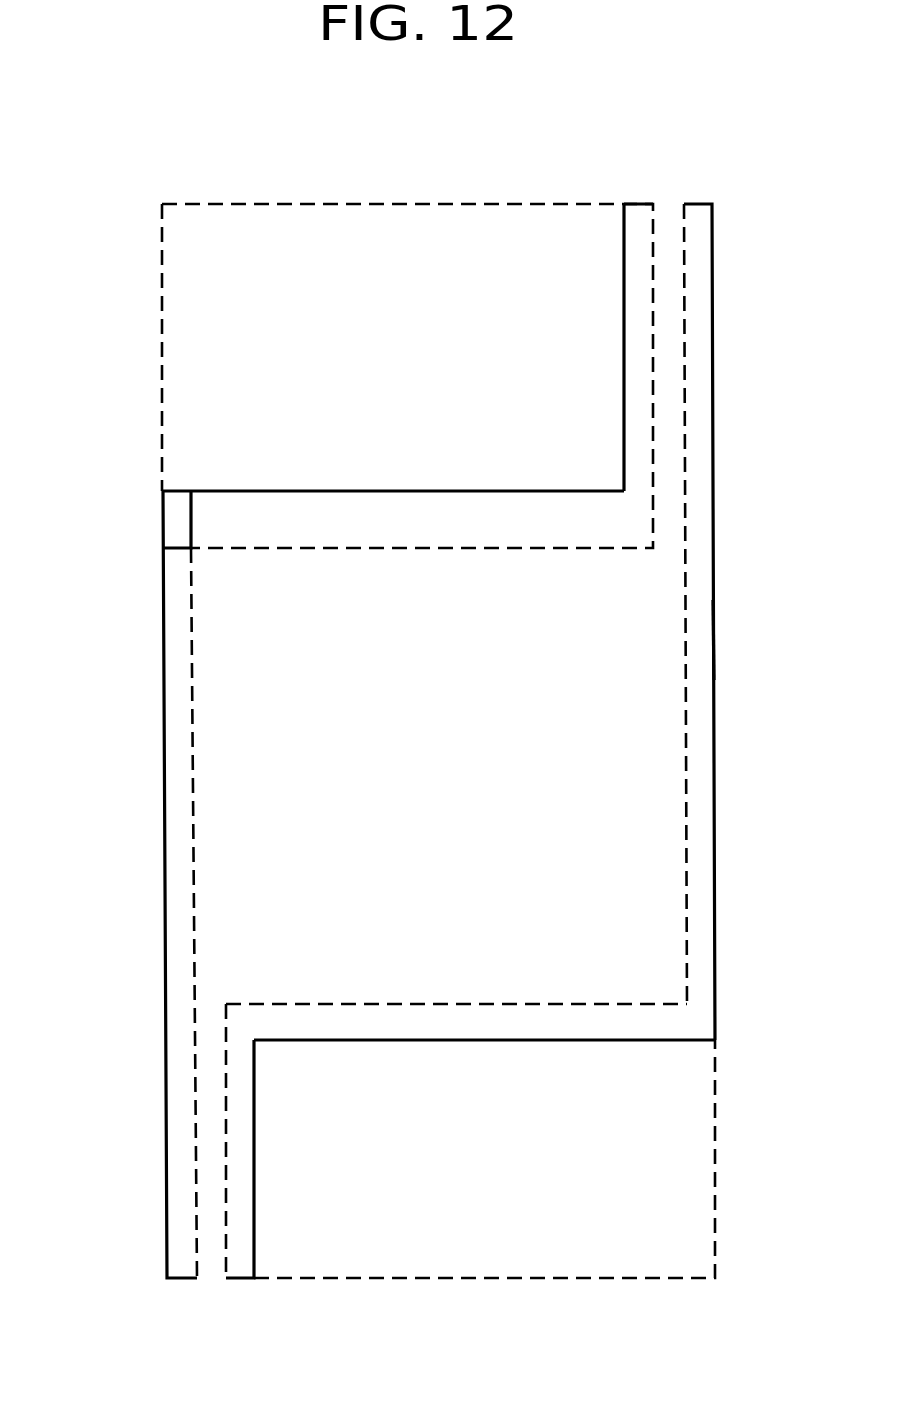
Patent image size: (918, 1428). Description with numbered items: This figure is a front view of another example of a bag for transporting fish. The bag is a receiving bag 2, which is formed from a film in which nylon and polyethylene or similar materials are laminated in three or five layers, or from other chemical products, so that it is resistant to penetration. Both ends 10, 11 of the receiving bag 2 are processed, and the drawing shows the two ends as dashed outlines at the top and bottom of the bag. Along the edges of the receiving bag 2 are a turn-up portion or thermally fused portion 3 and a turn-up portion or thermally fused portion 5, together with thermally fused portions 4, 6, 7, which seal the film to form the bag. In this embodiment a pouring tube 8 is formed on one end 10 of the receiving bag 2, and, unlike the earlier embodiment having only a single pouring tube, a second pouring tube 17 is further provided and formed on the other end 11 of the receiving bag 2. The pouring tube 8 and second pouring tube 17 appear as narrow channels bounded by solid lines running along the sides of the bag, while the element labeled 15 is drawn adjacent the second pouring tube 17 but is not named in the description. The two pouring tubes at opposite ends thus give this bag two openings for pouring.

The receiving bag 2 is at (714, 645).
The turn-up portion or thermally fused portion 3 is at (697, 723).
The thermally fused portion 4 is at (492, 1017).
The turn-up portion or thermally fused portion 5 is at (178, 785).
The thermally fused portion 6 is at (404, 522).
The thermally fused portion 7 is at (641, 344).
The pouring tube 8 is at (712, 348).
The end of the receiving bag 10 is at (313, 204).
The end of the receiving bag 11 is at (407, 1280).
The electrode 15 is at (240, 1148).
The second pouring tube 17 is at (166, 1150).